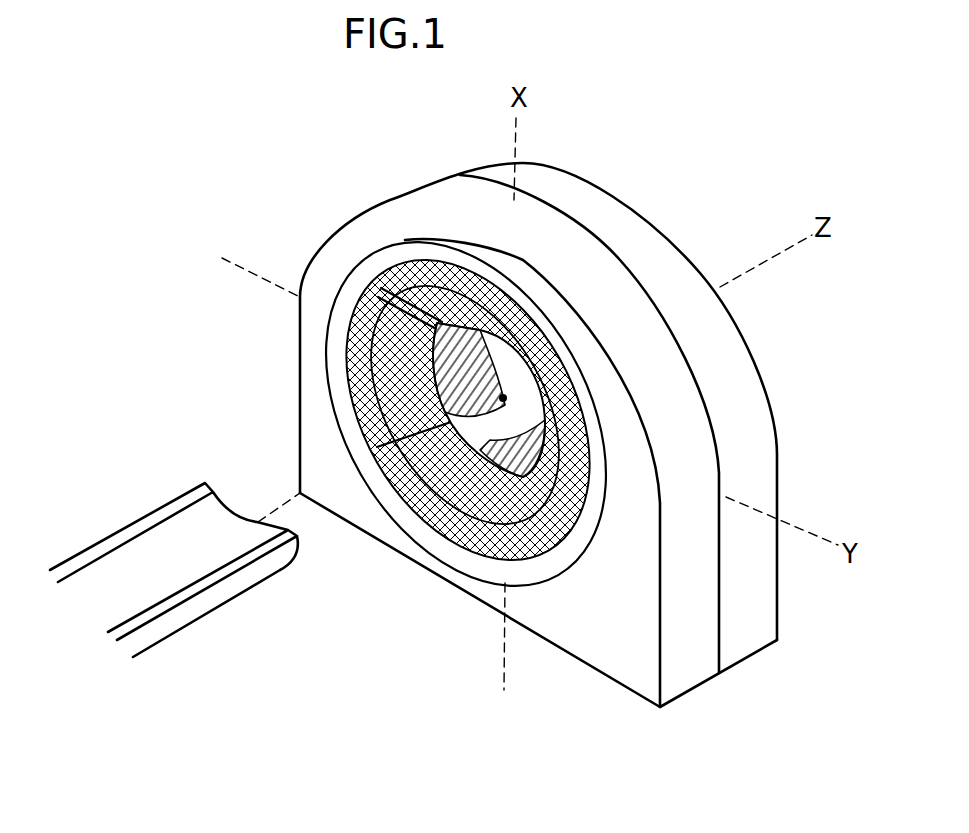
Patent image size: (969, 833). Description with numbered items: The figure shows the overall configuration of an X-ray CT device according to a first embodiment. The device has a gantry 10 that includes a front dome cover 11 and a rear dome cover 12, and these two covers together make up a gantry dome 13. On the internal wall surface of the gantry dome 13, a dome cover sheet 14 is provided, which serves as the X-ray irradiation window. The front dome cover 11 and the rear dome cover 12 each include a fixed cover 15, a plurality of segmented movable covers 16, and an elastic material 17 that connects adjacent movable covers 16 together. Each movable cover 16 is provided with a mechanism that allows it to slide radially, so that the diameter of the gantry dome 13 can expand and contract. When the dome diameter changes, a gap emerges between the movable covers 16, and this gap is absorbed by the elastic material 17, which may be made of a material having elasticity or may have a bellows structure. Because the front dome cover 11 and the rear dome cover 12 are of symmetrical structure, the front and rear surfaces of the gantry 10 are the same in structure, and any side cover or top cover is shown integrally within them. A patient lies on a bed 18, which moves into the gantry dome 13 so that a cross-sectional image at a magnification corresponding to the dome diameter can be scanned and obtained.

The gantry 10 is at (581, 158).
The front dome cover 11 is at (566, 633).
The rear dome cover 12 is at (656, 250).
The gantry dome 13 is at (475, 490).
The dome cover sheet 14 is at (450, 495).
The fixed cover 15 is at (377, 257).
The movable covers 16 is at (347, 373).
The elastic material 17 is at (357, 430).
The bed 18 is at (153, 572).